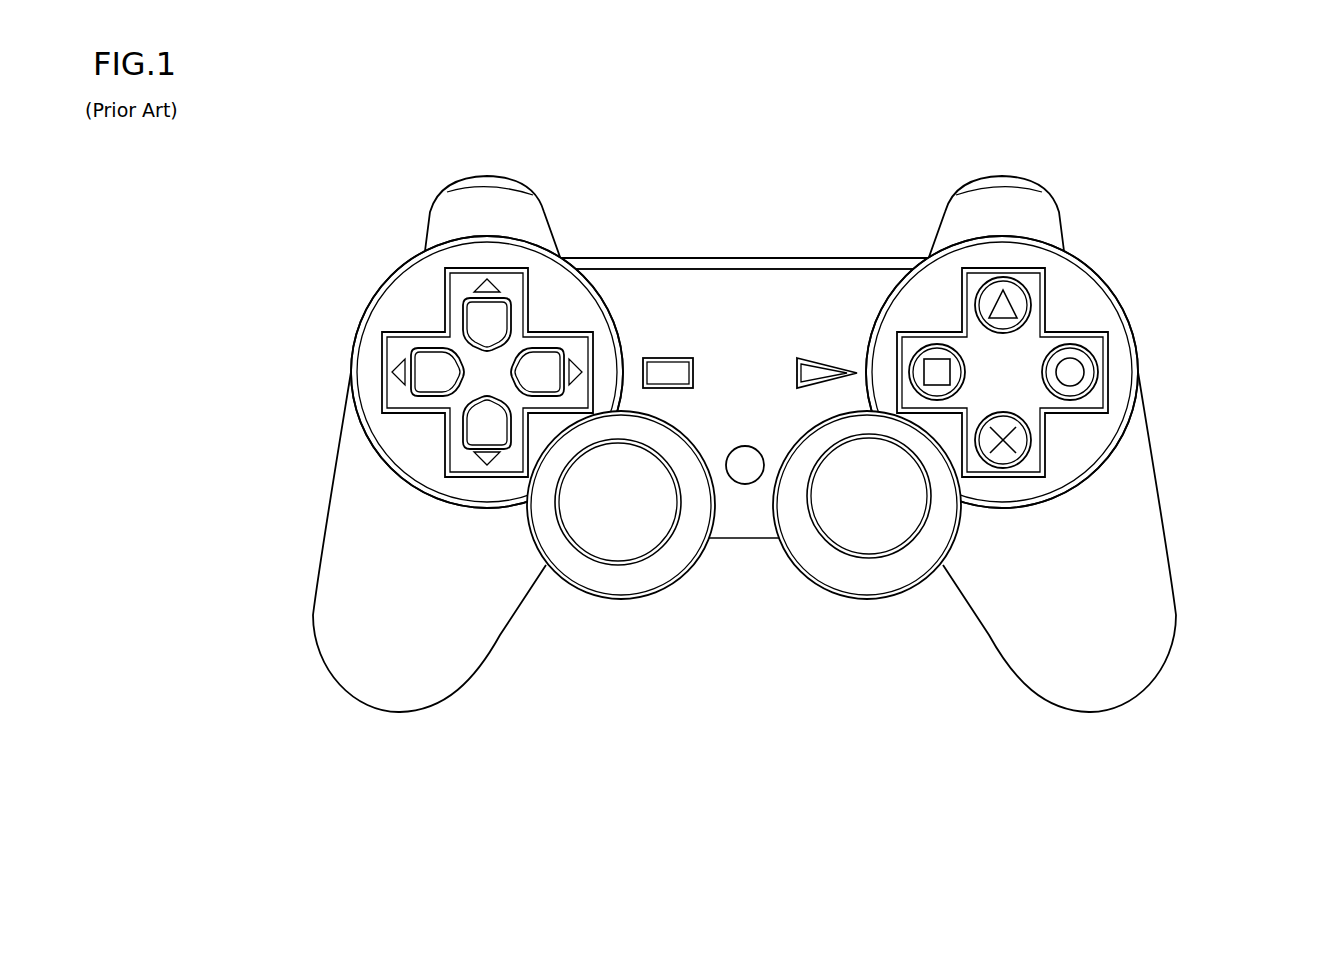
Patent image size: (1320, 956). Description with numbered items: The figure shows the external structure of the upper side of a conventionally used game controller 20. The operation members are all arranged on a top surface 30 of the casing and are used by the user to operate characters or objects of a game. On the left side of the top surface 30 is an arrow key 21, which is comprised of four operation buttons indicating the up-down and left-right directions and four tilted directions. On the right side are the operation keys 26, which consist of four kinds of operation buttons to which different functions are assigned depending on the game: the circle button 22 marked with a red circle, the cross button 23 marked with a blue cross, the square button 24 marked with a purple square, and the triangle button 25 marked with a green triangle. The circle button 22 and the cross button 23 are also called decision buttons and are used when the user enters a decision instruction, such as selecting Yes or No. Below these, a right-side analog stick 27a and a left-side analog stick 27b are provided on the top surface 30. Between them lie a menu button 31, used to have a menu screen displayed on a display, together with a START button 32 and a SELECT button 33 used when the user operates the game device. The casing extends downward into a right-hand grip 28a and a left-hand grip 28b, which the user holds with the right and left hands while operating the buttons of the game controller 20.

The game controller 20 is at (1213, 109).
The arrow key 21 is at (407, 343).
The circle button 22 is at (1087, 353).
The cross button 23 is at (1017, 440).
The square button 24 is at (957, 375).
The triangle button 25 is at (1017, 302).
The operation keys 26 is at (1254, 245).
The right-side analog stick 27a is at (883, 537).
The left-side analog stick 27b is at (633, 537).
The right-hand grip 28a is at (1103, 667).
The left-hand grip 28b is at (397, 673).
The top surface 30 is at (665, 297).
The menu button 31 is at (746, 476).
The START button 32 is at (800, 372).
The SELECT button 33 is at (678, 373).